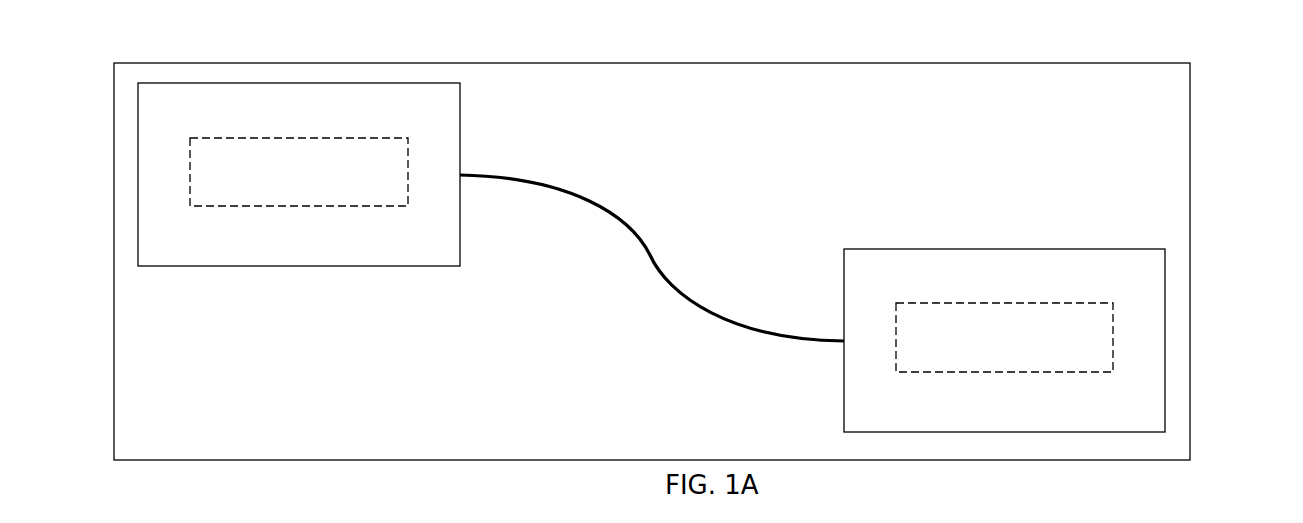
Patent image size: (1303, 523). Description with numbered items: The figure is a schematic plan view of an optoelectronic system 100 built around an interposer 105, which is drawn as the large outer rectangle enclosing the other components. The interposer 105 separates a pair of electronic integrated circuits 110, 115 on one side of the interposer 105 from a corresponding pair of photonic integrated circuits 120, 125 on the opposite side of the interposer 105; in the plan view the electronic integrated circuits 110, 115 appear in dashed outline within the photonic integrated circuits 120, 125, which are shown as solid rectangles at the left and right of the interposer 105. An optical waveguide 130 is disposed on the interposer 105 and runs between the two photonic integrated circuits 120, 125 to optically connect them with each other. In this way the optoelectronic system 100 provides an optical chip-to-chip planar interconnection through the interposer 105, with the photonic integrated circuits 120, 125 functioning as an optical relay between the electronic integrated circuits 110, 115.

The optoelectronic system 100 is at (1217, 62).
The interposer 105 is at (972, 63).
The electronic integrated circuit 110 is at (318, 138).
The electronic integrated circuit 115 is at (938, 302).
The photonic integrated circuit 120 is at (460, 220).
The photonic integrated circuit 125 is at (844, 373).
The optical waveguide 130 is at (665, 283).